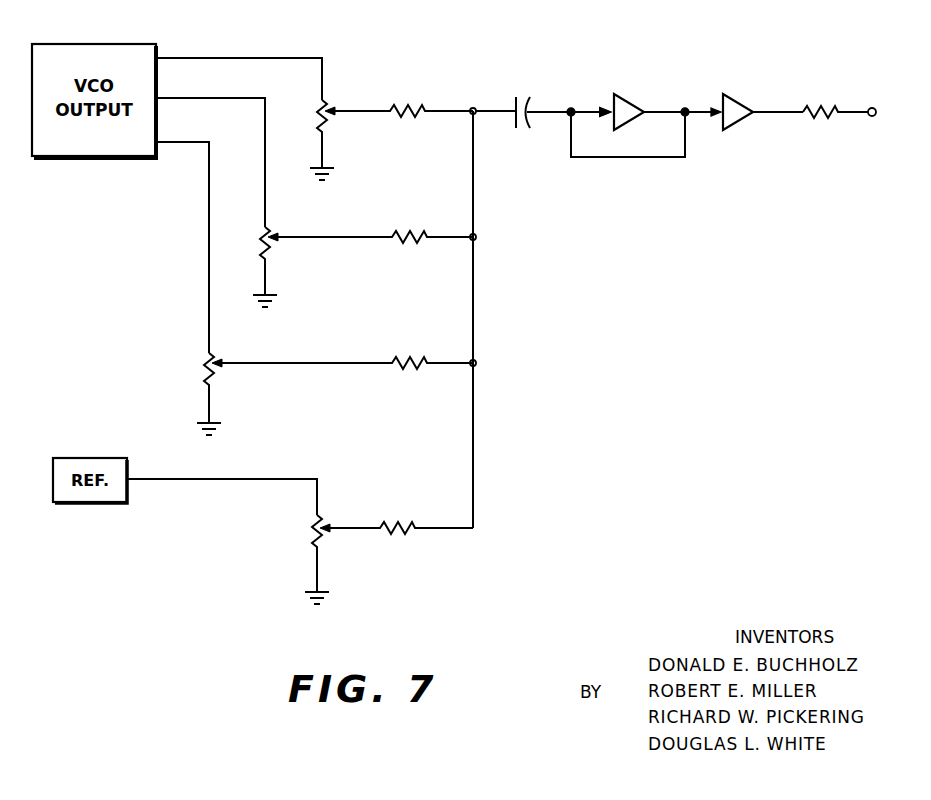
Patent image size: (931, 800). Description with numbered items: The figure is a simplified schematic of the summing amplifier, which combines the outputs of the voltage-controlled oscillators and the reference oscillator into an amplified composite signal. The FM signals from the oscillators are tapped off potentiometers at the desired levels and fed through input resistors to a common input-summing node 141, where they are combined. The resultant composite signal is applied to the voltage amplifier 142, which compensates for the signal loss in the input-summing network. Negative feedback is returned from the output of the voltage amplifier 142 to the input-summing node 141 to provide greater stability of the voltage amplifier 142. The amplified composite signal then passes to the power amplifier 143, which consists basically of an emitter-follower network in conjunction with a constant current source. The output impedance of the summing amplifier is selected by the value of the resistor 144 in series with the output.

The input-summing node 141 is at (571, 108).
The voltage amplifier 142 is at (633, 81).
The power amplifier 143 is at (735, 126).
The resistor 144 is at (804, 110).